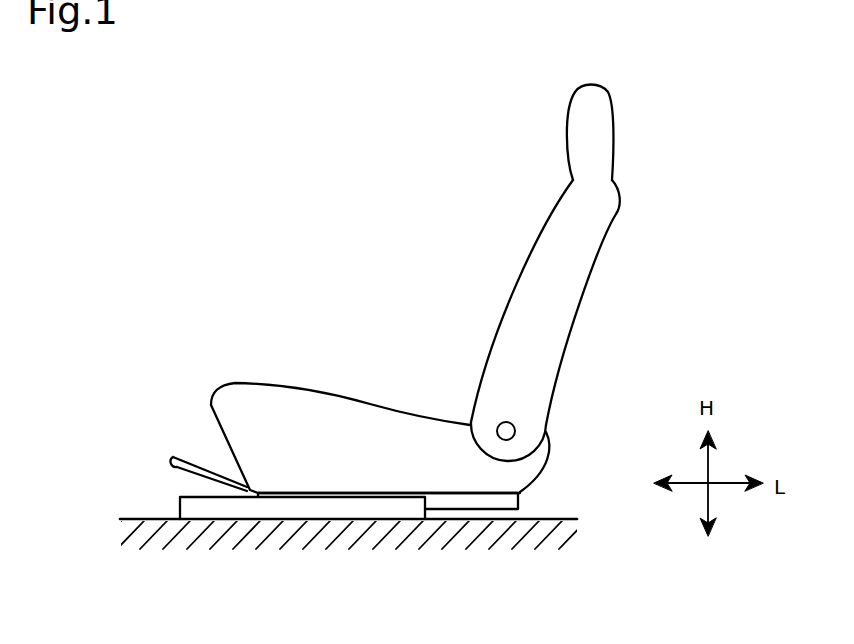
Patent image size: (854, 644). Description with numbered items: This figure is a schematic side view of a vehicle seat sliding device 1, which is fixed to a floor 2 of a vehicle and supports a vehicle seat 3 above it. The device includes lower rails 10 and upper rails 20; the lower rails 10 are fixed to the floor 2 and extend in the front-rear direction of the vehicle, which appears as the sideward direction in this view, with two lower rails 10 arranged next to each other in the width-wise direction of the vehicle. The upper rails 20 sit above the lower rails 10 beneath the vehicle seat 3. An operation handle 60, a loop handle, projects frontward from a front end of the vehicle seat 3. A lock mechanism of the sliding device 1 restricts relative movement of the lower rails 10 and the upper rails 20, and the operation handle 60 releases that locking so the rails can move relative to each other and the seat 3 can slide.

The vehicle seat sliding device 1 is at (90, 425).
The floor 2 is at (125, 518).
The vehicle seat 3 is at (258, 383).
The lower rails 10 is at (180, 503).
The upper rails 20 is at (519, 501).
The operation handle 60 is at (174, 457).